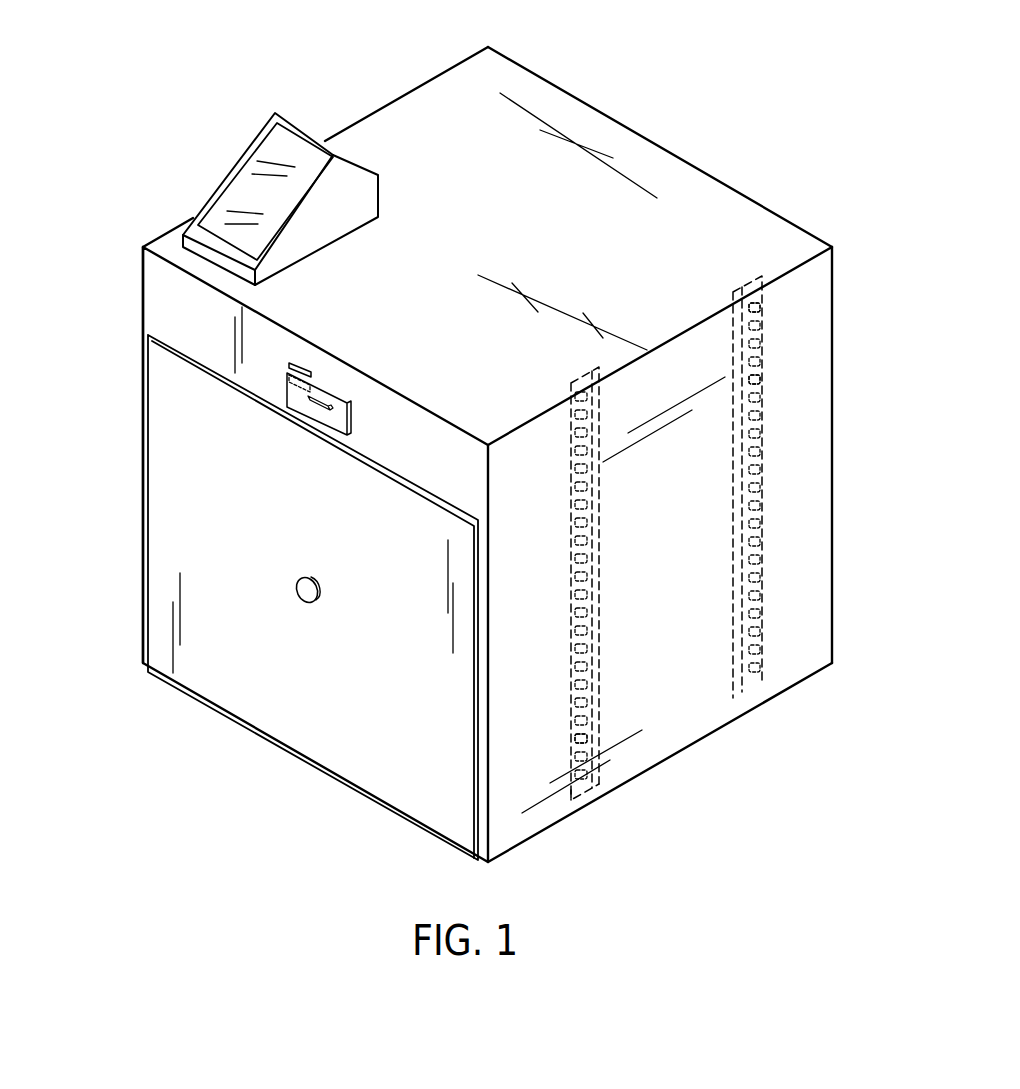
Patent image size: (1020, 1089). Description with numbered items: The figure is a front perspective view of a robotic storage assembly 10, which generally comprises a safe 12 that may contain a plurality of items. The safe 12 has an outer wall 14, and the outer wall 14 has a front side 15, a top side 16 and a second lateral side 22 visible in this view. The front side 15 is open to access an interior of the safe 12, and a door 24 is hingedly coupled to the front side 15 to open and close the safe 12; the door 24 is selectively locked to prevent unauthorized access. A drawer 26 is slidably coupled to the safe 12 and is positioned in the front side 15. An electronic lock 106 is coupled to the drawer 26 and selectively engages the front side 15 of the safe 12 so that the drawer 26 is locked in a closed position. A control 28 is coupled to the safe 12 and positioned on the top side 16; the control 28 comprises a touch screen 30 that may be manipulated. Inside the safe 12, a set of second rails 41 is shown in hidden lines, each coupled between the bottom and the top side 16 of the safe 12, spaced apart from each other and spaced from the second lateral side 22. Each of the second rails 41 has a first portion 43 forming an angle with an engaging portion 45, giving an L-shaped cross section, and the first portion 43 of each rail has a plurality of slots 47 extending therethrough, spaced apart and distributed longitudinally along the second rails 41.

The robotic storage assembly 10 is at (653, 64).
The safe 12 is at (548, 81).
The outer wall 14 is at (740, 243).
The front side 15 is at (155, 297).
The top side 16 is at (670, 180).
The second lateral side 22 is at (685, 723).
The door 24 is at (332, 750).
The drawer 26 is at (284, 386).
The control 28 is at (292, 120).
The touch screen 30 is at (240, 173).
The second rails 41 is at (737, 672).
The first portion 43 is at (578, 807).
The engaging portion 45 is at (600, 733).
The slots 47 is at (757, 395).
The electronic lock 106 is at (289, 379).